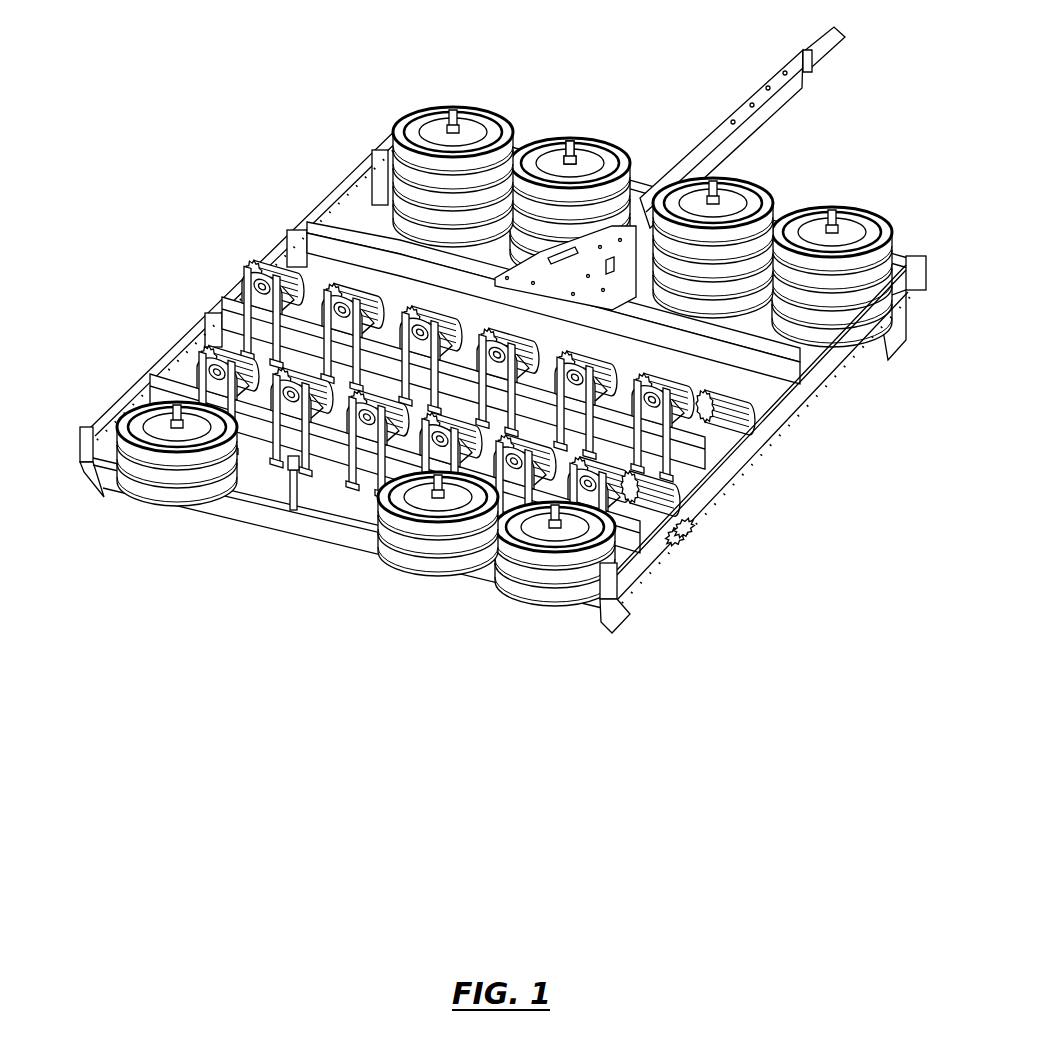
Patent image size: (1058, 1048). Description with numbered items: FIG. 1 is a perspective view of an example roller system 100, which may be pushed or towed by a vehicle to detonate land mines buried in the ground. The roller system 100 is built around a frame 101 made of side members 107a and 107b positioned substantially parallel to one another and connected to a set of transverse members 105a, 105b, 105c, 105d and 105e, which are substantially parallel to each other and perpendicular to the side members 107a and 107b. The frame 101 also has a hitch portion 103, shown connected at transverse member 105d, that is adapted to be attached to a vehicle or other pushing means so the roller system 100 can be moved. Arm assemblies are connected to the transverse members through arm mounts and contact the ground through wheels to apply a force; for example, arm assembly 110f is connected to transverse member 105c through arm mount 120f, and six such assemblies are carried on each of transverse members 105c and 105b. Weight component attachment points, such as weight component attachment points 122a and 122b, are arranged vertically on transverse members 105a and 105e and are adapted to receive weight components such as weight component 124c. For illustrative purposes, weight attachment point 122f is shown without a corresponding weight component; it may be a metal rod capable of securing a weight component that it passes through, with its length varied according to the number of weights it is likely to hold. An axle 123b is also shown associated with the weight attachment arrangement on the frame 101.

The roller system 100 is at (160, 130).
The frame 101 is at (102, 261).
The hitch portion 103 is at (767, 80).
The transverse member 105a is at (105, 438).
The transverse member 105b is at (160, 368).
The transverse member 105c is at (226, 300).
The transverse member 105d is at (297, 230).
The transverse member 105e is at (372, 152).
The side member 107a is at (258, 250).
The side member 107b is at (690, 522).
The arm assembly 110f is at (766, 389).
The arm mount 120f is at (706, 452).
The weight component attachment point 122a is at (440, 112).
The weight component attachment point 122b is at (556, 144).
The weight attachment point 122f is at (296, 512).
The axle 123b is at (586, 165).
The weight component 124c is at (778, 203).